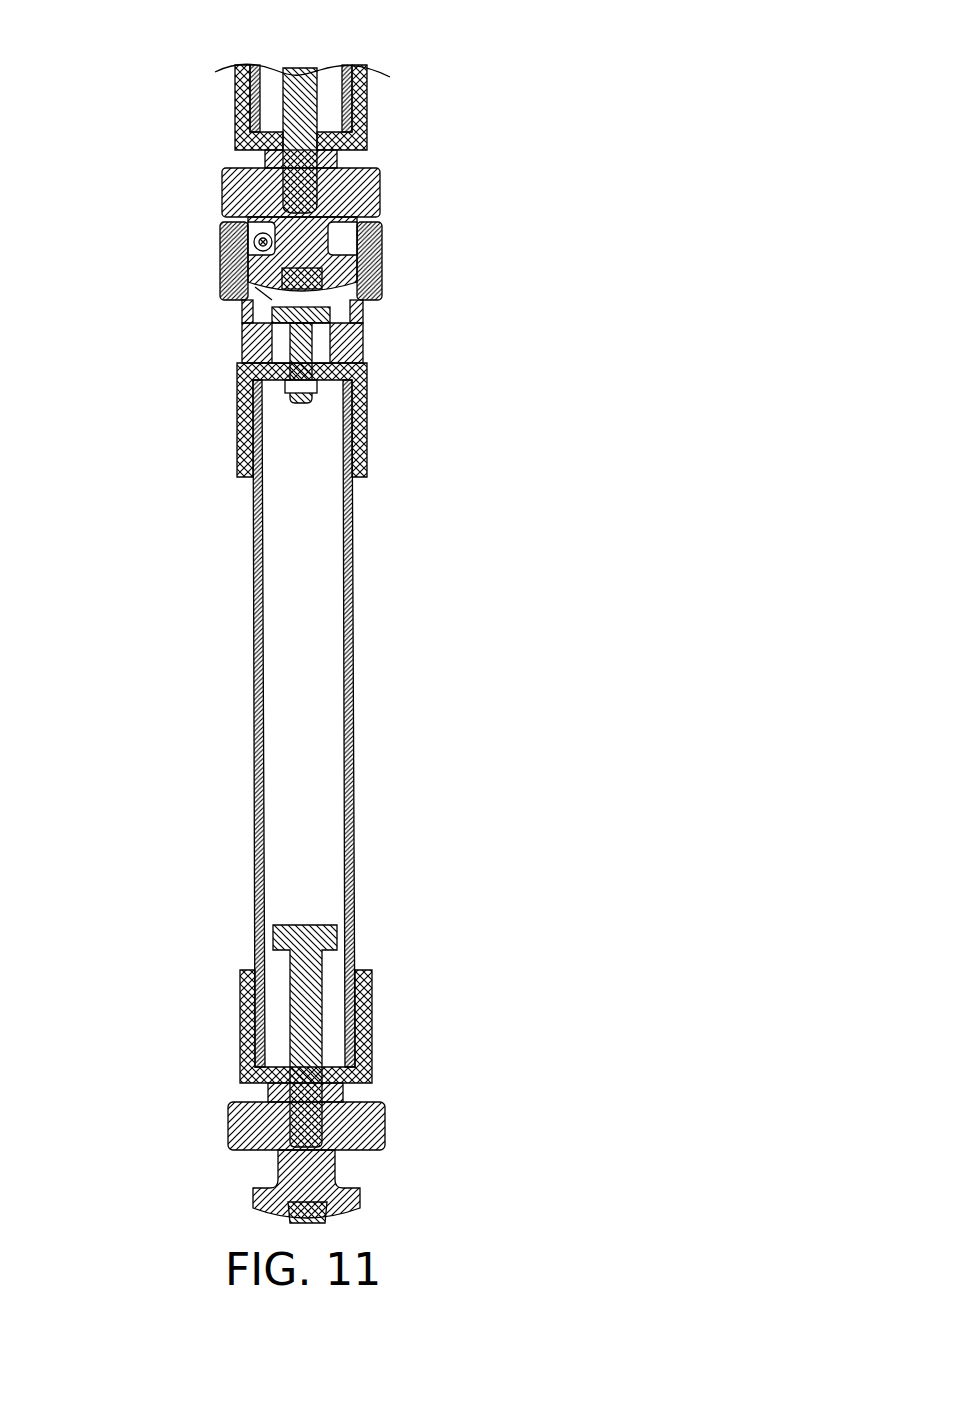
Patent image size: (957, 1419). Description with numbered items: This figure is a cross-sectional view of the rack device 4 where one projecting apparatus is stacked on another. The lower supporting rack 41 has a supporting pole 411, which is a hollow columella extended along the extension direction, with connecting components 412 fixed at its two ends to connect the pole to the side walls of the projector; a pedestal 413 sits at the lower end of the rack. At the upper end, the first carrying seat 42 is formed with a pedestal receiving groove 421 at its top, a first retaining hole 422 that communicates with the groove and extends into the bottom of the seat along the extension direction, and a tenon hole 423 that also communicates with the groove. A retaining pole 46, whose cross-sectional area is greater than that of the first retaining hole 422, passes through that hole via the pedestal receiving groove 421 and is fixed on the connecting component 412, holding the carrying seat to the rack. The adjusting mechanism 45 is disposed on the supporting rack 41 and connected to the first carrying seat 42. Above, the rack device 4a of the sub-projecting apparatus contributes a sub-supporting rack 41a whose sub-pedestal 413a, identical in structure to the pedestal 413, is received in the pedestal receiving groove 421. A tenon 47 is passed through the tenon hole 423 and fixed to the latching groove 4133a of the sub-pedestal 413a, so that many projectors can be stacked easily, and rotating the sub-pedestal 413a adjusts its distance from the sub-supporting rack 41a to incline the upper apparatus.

The rack device 4 is at (147, 515).
The rack device of the sub-projecting apparatus 4a is at (410, 62).
The supporting rack 41 is at (253, 680).
The sub-supporting rack 41a is at (382, 107).
The supporting pole 411 is at (253, 588).
The connecting component 412 is at (238, 412).
The pedestal 413 is at (395, 1123).
The sub-pedestal 413a is at (385, 180).
The latching groove 4133a is at (343, 237).
The first carrying seat 42 is at (403, 280).
The pedestal receiving groove 421 is at (222, 280).
The first retaining hole 422 is at (240, 345).
The tenon hole 423 is at (223, 240).
The adjusting mechanism 45 is at (243, 323).
The retaining pole 46 is at (305, 345).
The tenon 47 is at (223, 222).